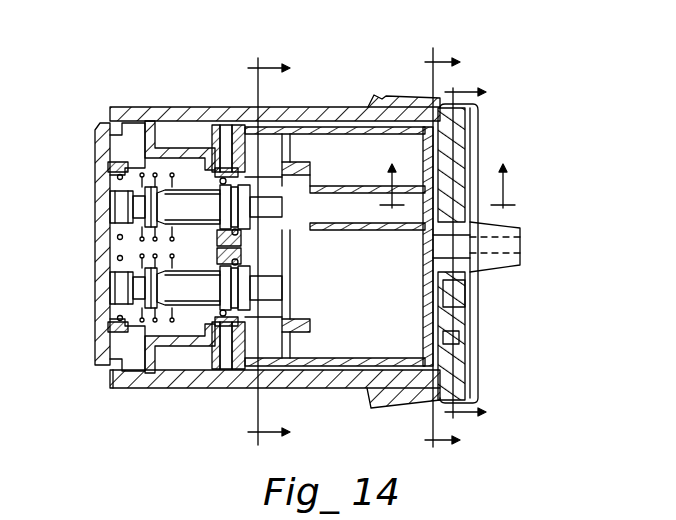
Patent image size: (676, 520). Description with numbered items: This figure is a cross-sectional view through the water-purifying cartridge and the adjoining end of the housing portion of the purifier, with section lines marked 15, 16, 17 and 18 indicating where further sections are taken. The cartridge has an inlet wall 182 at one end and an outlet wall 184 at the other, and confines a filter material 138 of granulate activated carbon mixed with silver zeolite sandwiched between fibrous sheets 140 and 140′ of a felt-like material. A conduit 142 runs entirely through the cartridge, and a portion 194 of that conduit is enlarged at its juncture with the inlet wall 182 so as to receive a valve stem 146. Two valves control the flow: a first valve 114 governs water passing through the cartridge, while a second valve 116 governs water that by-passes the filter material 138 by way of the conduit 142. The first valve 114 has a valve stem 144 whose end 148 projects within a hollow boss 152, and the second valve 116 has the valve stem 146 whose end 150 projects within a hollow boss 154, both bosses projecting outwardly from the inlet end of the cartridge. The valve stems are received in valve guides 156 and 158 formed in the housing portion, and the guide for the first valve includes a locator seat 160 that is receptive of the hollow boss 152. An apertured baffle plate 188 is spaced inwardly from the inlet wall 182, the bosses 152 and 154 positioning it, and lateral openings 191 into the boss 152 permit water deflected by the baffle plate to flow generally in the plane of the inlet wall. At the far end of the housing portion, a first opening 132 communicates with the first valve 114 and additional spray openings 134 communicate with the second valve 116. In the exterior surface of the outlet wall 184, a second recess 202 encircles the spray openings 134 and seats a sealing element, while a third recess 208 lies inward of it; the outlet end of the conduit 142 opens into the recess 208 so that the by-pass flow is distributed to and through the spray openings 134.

The first valve 114 is at (120, 288).
The second valve 116 is at (118, 206).
The first opening 132 is at (520, 249).
The additional opening 134 is at (473, 210).
The filter material 138 is at (400, 306).
The fibrous sheet 140 is at (291, 152).
The fibrous sheet 140′ is at (424, 337).
The conduit 142 is at (362, 240).
The valve stem 144 is at (205, 318).
The valve stem 146 is at (188, 205).
The end of valve stem 148 is at (292, 290).
The end of valve stem 150 is at (286, 207).
The hollow boss 152 is at (213, 318).
The hollow boss 154 is at (228, 148).
The valve guide 156 is at (125, 335).
The valve guide 158 is at (160, 160).
The locator seat 160 is at (192, 300).
The inlet wall 182 is at (212, 148).
The outlet wall 184 is at (447, 190).
The apertured baffle plate 188 is at (292, 303).
The lateral openings 191 is at (296, 294).
The enlarged portion of conduit 194 is at (291, 166).
The second recess 202 is at (445, 337).
The third recess 208 is at (447, 305).
The section line 15- 15 is at (478, 255).
The section line 16- 16 is at (286, 249).
The section line 17- 17 is at (449, 168).
The section line 18- 18 is at (456, 247).